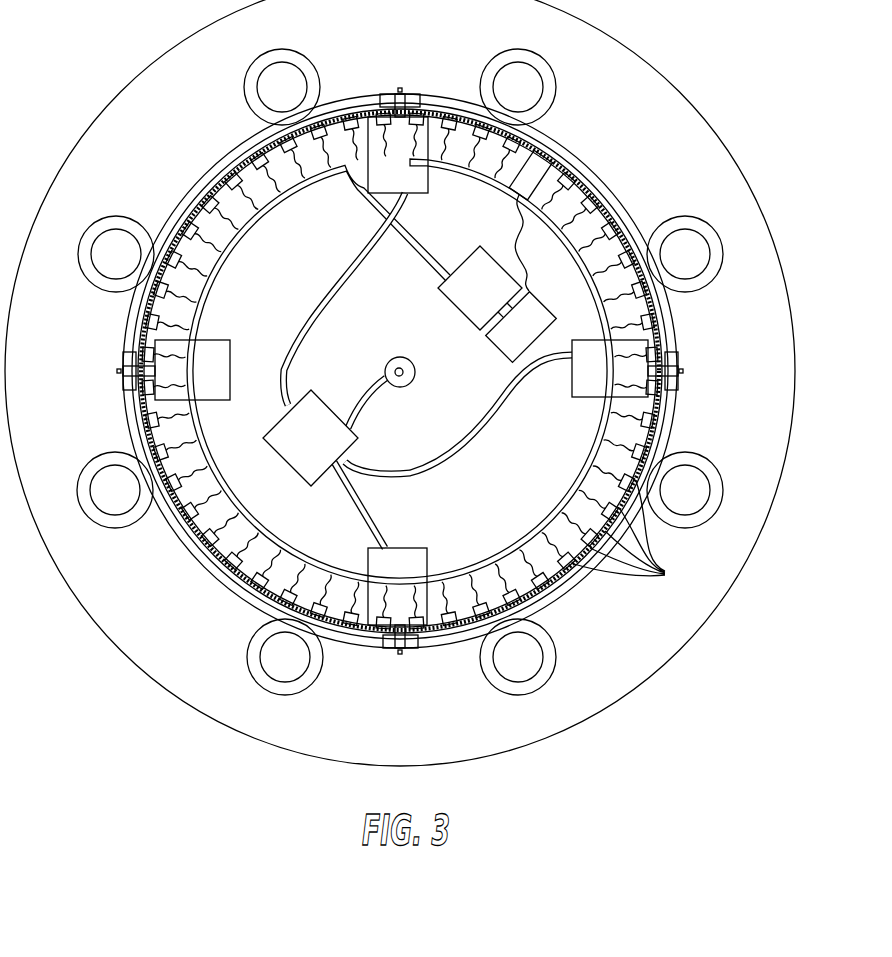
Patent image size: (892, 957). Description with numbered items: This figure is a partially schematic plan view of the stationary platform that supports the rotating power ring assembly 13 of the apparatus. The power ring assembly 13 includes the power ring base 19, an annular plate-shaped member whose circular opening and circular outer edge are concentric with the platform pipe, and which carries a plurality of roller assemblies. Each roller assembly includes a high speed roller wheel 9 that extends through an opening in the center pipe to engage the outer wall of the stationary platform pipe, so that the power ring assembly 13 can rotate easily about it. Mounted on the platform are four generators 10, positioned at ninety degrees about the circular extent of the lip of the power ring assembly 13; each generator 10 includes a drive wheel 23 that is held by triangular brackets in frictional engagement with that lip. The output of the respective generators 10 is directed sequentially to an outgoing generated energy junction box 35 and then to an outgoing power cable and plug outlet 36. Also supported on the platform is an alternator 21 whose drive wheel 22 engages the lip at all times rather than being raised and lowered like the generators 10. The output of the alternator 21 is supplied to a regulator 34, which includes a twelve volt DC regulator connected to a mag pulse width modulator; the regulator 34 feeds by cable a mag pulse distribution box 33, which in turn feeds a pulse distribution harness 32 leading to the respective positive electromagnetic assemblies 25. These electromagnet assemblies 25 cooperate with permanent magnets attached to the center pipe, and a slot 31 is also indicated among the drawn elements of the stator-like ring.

The roller wheel 9 is at (309, 60).
The generator 10 is at (382, 207).
The power ring assembly 13 is at (400, 371).
The power ring base 19 is at (160, 684).
The alternator 21 is at (542, 200).
The drive wheel 22 is at (566, 152).
The drive wheel 23 is at (404, 90).
The electromagnetic assembly 25 is at (170, 270).
The stator slot 31 is at (582, 526).
The pulse distribution harness 32 is at (420, 237).
The mag pulse distribution box 33 is at (478, 274).
The regulator 34 is at (536, 327).
The outgoing generated energy junction box 35 is at (306, 458).
The outgoing power cable and plug outlet 36 is at (416, 358).